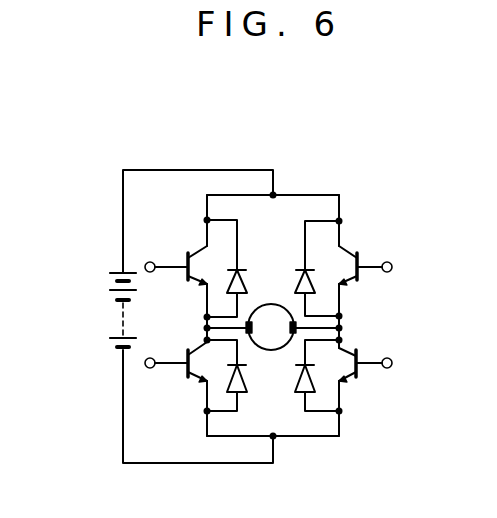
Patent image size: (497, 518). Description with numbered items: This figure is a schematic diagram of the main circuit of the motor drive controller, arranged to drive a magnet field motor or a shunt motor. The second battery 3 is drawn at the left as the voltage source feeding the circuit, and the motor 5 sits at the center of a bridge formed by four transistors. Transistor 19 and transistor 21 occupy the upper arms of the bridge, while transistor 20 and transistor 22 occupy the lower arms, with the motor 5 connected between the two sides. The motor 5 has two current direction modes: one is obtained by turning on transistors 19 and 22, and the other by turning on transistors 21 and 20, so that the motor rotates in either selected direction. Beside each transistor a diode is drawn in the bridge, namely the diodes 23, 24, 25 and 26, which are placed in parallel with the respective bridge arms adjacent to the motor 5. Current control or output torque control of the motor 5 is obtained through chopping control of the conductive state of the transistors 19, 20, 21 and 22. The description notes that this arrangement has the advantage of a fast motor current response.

The second battery 3 is at (105, 282).
The motor 5 is at (268, 340).
The transistor 19 is at (186, 251).
The transistor 20 is at (195, 379).
The transistor 21 is at (360, 253).
The transistor 22 is at (352, 378).
The diode 23 is at (254, 272).
The diode 24 is at (243, 393).
The diode 25 is at (290, 276).
The diode 26 is at (298, 394).